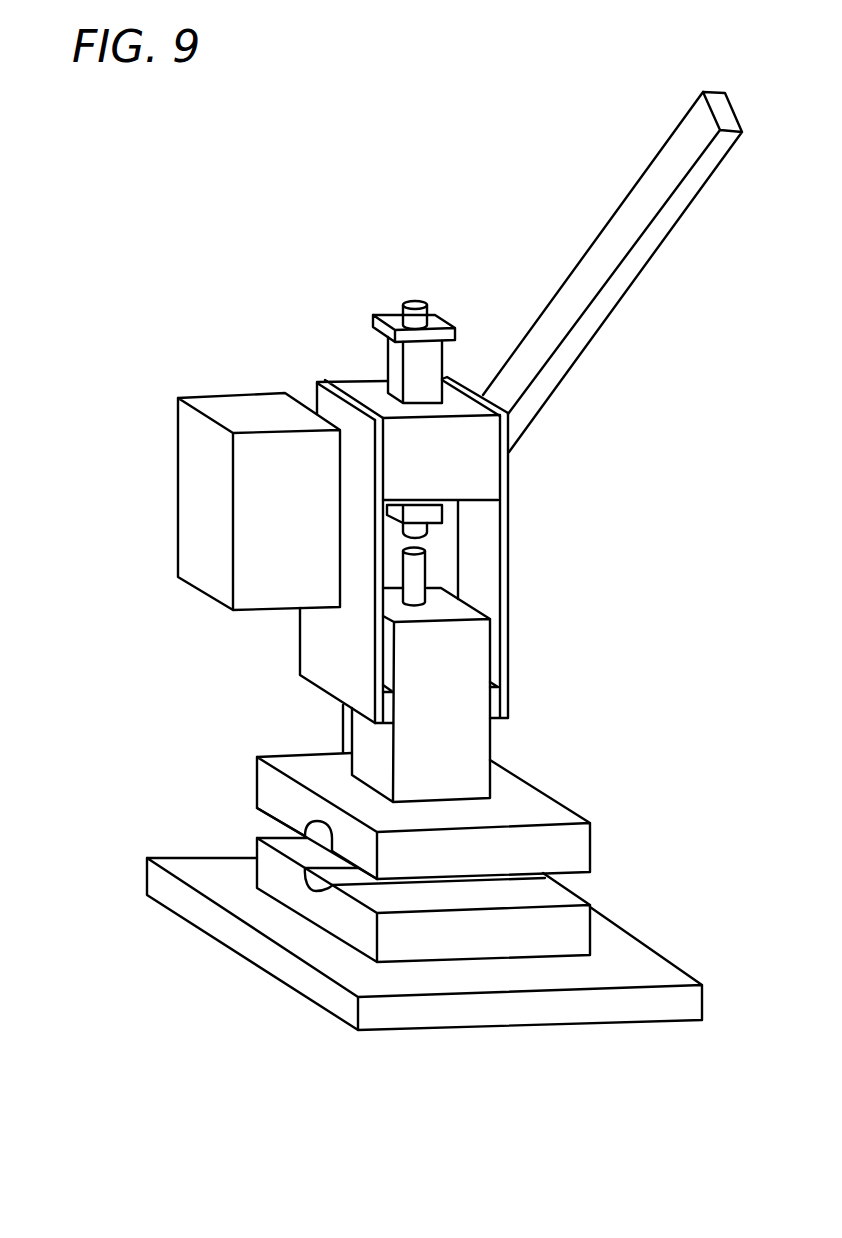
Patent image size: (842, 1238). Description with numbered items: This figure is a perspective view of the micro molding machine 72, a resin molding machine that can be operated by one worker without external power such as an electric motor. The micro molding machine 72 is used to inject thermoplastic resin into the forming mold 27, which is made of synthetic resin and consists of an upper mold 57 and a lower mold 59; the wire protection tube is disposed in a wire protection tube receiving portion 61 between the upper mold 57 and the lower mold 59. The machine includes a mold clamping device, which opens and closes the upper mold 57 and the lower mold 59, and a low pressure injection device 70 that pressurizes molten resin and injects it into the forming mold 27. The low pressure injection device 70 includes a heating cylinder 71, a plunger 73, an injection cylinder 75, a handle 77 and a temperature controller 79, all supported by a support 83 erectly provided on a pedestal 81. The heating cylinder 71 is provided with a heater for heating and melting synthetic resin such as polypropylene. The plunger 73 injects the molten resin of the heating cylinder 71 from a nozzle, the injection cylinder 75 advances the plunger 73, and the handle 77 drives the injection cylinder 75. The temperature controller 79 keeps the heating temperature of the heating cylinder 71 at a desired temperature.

The forming mold 27 is at (247, 812).
The upper mold 57 is at (493, 855).
The lower mold 59 is at (437, 937).
The wire protection tube receiving portion 61 is at (320, 887).
The low pressure injection device 70 is at (545, 506).
The heating cylinder 71 is at (492, 753).
The micro molding machine 72 is at (336, 252).
The plunger 73 is at (417, 572).
The injection cylinder 75 is at (395, 368).
The handle 77 is at (657, 252).
The temperature controller 79 is at (200, 498).
The pedestal 81 is at (662, 957).
The support 83 is at (343, 740).